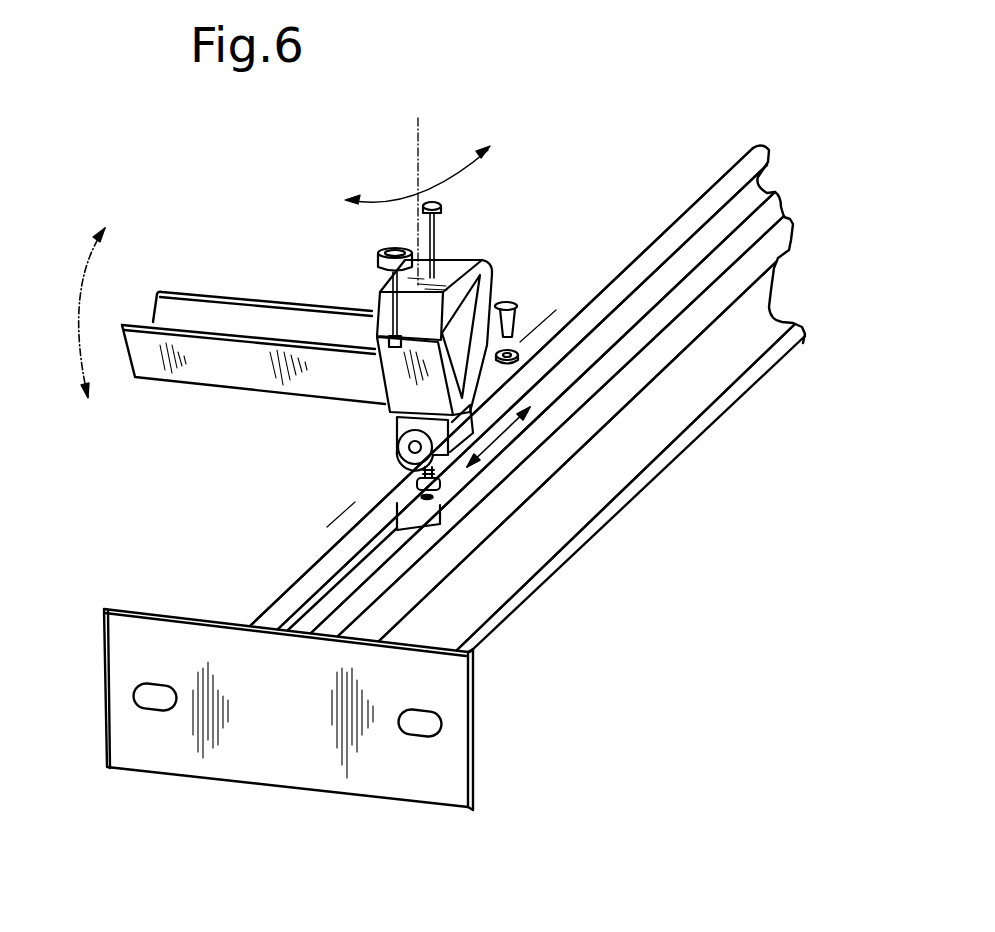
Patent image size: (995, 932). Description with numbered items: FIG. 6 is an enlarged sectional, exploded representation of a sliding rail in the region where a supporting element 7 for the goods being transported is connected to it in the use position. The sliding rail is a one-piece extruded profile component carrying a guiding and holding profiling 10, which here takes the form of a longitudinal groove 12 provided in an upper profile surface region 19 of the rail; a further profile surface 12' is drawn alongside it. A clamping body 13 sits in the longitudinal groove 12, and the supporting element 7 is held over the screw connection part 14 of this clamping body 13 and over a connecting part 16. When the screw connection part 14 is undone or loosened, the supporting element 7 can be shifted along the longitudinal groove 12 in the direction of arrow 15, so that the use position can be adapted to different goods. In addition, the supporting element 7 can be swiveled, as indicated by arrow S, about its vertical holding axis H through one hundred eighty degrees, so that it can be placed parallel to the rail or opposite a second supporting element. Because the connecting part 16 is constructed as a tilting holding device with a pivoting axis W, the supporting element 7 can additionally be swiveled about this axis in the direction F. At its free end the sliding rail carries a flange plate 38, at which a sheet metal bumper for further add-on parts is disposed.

The supporting element 7 is at (204, 282).
The guiding and holding profiling 10 is at (745, 200).
The longitudinal groove 12 is at (543, 399).
The rail surface 12' is at (605, 456).
The clamping body 13 is at (438, 499).
The screw connection part 14 is at (417, 483).
The arrow 15 is at (495, 440).
The connecting part 16 is at (365, 416).
The upper profile surface region 19 is at (708, 198).
The flange plate 38 is at (293, 737).
The vertical holding axis H is at (419, 128).
The arrow S is at (363, 197).
The pivoting axis W is at (570, 297).
The direction F is at (73, 290).